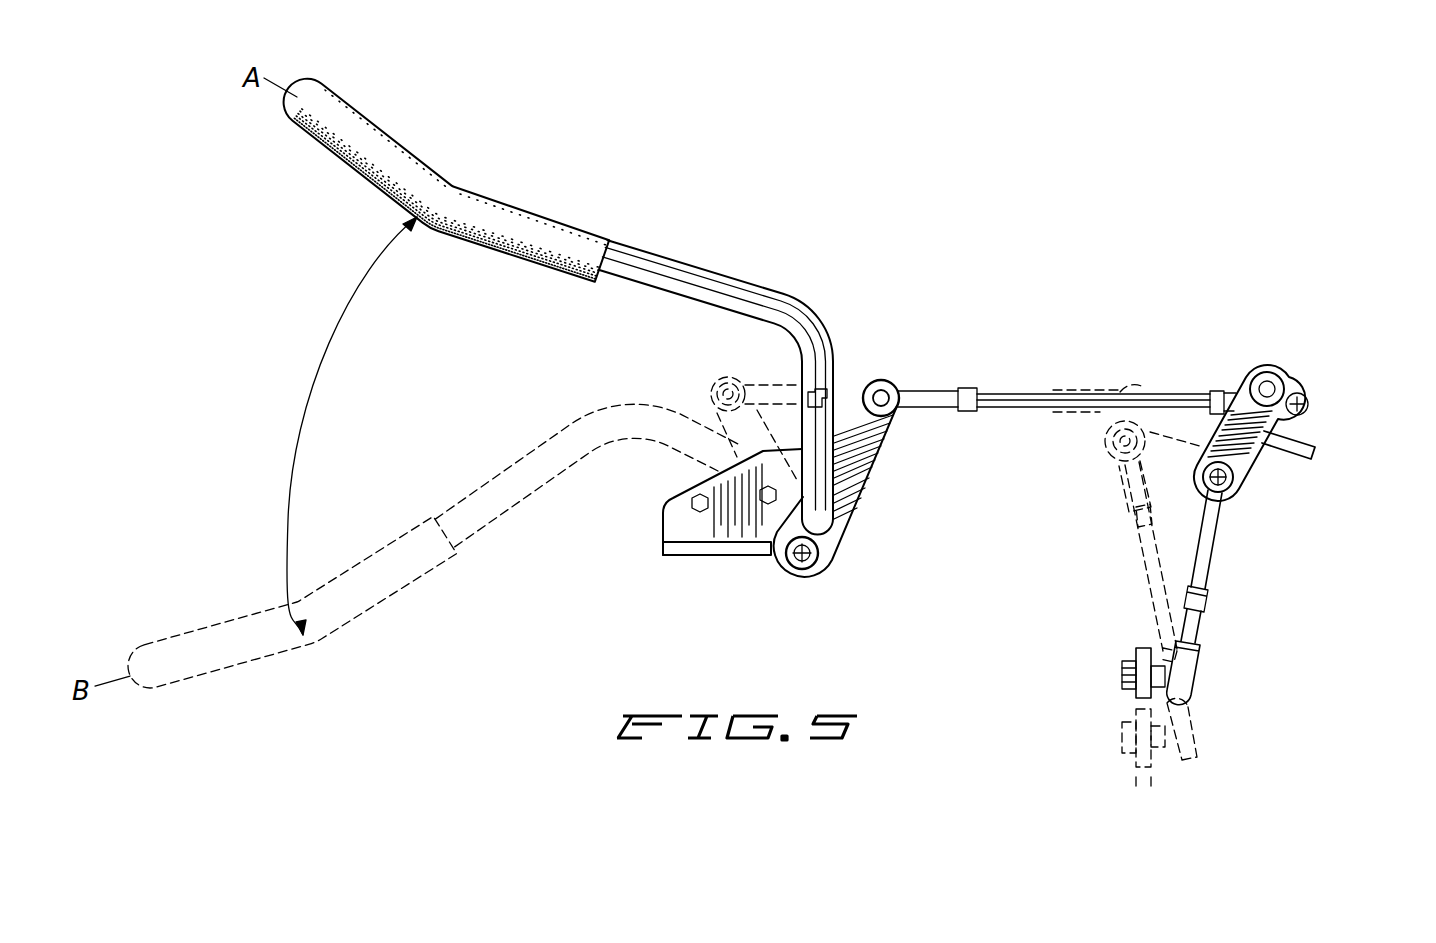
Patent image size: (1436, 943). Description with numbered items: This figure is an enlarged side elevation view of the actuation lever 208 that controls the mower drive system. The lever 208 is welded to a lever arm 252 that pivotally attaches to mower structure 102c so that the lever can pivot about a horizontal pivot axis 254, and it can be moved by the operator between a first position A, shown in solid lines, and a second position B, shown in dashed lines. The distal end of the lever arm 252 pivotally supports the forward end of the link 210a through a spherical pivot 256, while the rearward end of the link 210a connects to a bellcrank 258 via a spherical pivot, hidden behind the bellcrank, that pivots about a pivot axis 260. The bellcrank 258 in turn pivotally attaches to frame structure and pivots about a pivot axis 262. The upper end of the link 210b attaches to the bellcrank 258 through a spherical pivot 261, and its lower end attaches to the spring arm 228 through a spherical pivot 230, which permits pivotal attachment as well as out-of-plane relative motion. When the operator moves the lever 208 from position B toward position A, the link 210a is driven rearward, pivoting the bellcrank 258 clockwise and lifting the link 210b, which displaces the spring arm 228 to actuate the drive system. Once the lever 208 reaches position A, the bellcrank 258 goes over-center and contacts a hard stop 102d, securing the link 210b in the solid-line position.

The actuation lever 208 is at (378, 122).
The link 210a is at (851, 378).
The link 210b is at (1147, 597).
The lever arm 252 is at (870, 482).
The horizontal pivot axis 254 is at (805, 570).
The spherical pivot 256 is at (715, 387).
The bellcrank 258 is at (1232, 385).
The pivot axis 260 is at (1306, 402).
The spherical pivot 261 is at (1272, 371).
The pivot axis 262 is at (1233, 490).
The spring arm 228 is at (1132, 697).
The spherical pivot 230 is at (1197, 662).
The mower structure 102c is at (670, 562).
The hard stop 102d is at (1300, 462).